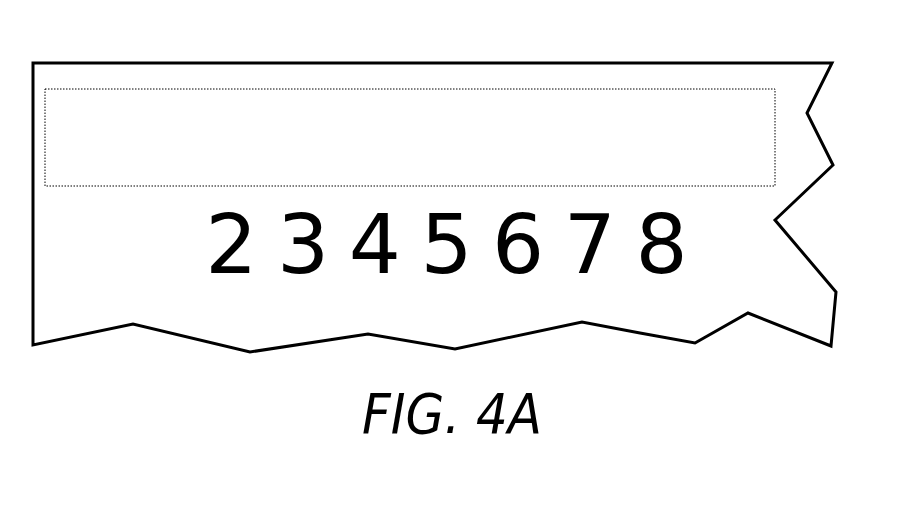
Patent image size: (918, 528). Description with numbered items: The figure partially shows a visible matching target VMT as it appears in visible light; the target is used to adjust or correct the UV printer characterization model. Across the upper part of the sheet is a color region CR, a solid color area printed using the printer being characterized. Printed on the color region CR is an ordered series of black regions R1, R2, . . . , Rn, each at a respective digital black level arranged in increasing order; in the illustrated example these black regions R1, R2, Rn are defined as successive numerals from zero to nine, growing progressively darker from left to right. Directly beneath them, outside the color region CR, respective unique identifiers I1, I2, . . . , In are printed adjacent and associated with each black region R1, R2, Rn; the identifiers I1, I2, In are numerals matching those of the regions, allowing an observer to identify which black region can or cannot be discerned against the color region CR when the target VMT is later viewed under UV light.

The black region R1 is at (90, 108).
The black region R2 is at (165, 110).
The black region Rn is at (735, 110).
The color region CR is at (200, 98).
The visible matching target VMT is at (441, 78).
The unique identifier I1 is at (105, 266).
The unique identifier I2 is at (168, 266).
The unique identifier In is at (753, 258).